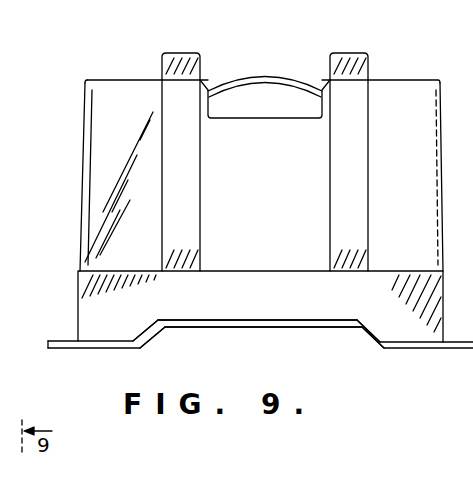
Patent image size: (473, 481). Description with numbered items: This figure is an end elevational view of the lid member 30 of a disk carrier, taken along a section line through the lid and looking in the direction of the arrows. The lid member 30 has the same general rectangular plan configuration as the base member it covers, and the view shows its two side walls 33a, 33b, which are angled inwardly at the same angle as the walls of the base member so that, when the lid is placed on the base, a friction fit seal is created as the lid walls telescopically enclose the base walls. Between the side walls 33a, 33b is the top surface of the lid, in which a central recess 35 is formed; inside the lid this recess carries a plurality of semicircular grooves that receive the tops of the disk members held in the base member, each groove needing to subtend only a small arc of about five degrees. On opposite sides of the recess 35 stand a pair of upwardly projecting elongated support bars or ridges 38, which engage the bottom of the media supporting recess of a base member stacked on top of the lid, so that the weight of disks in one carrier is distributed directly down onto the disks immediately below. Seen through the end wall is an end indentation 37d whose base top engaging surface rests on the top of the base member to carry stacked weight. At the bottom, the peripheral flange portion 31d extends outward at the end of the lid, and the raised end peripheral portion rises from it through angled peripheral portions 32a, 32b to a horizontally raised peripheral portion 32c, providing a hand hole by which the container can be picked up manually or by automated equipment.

The lid member 30 is at (80, 232).
The flange portion 31d is at (2, 318).
The angled peripheral portion 32a is at (153, 334).
The angled peripheral portion 32b is at (373, 341).
The horizontally raised peripheral portion 32c is at (272, 328).
The side wall 33a is at (85, 143).
The side wall 33b is at (443, 98).
The central recess 35 is at (266, 76).
The end indentation 37d is at (330, 183).
The ridges 38 is at (165, 54).